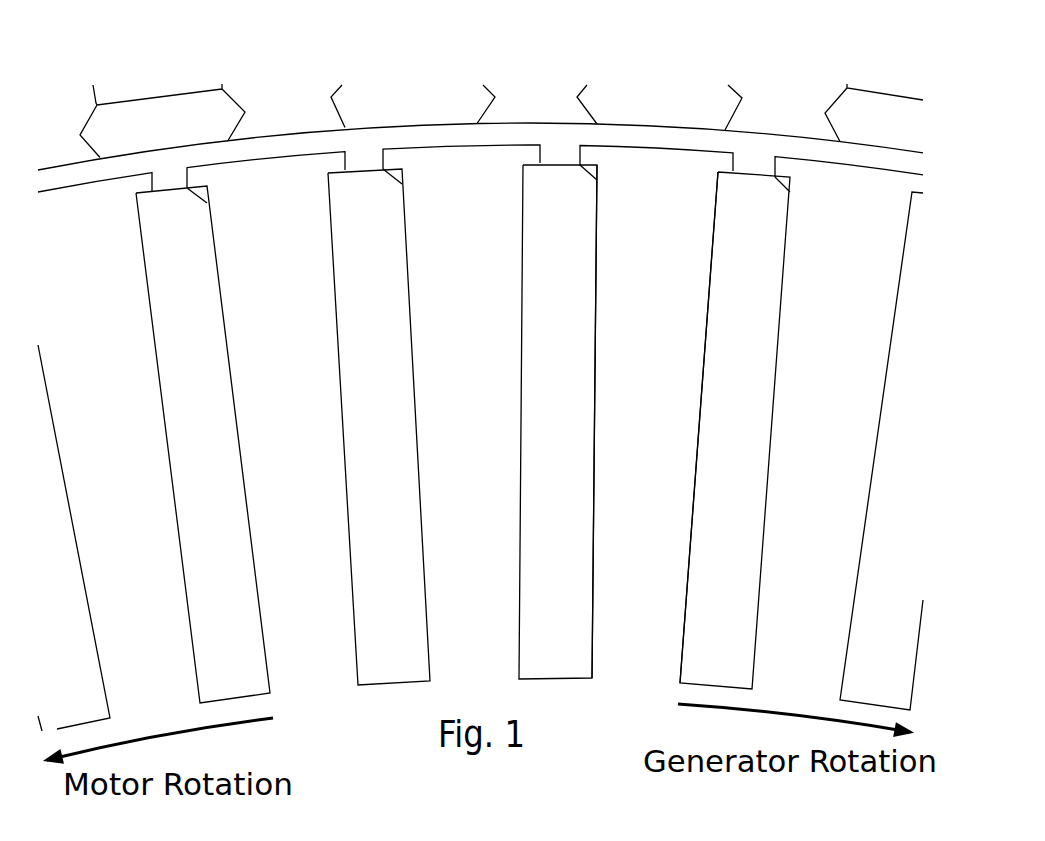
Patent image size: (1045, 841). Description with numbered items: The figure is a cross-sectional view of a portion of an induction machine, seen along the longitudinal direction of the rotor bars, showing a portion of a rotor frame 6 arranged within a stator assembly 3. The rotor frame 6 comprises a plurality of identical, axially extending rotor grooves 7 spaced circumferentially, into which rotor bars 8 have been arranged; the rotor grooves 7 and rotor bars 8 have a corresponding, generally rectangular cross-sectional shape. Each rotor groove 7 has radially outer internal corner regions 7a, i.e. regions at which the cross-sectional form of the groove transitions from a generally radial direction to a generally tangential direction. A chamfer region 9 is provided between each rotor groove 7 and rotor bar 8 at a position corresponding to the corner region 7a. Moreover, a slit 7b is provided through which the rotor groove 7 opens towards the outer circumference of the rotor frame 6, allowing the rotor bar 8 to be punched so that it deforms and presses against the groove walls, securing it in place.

The stator assembly 3 is at (118, 103).
The rotor frame 6 is at (710, 167).
The rotor groove 7 is at (583, 285).
The radially outer internal corner region 7a is at (397, 170).
The slit 7b is at (557, 155).
The rotor bar 8 is at (362, 222).
The chamfer region 9 is at (392, 168).